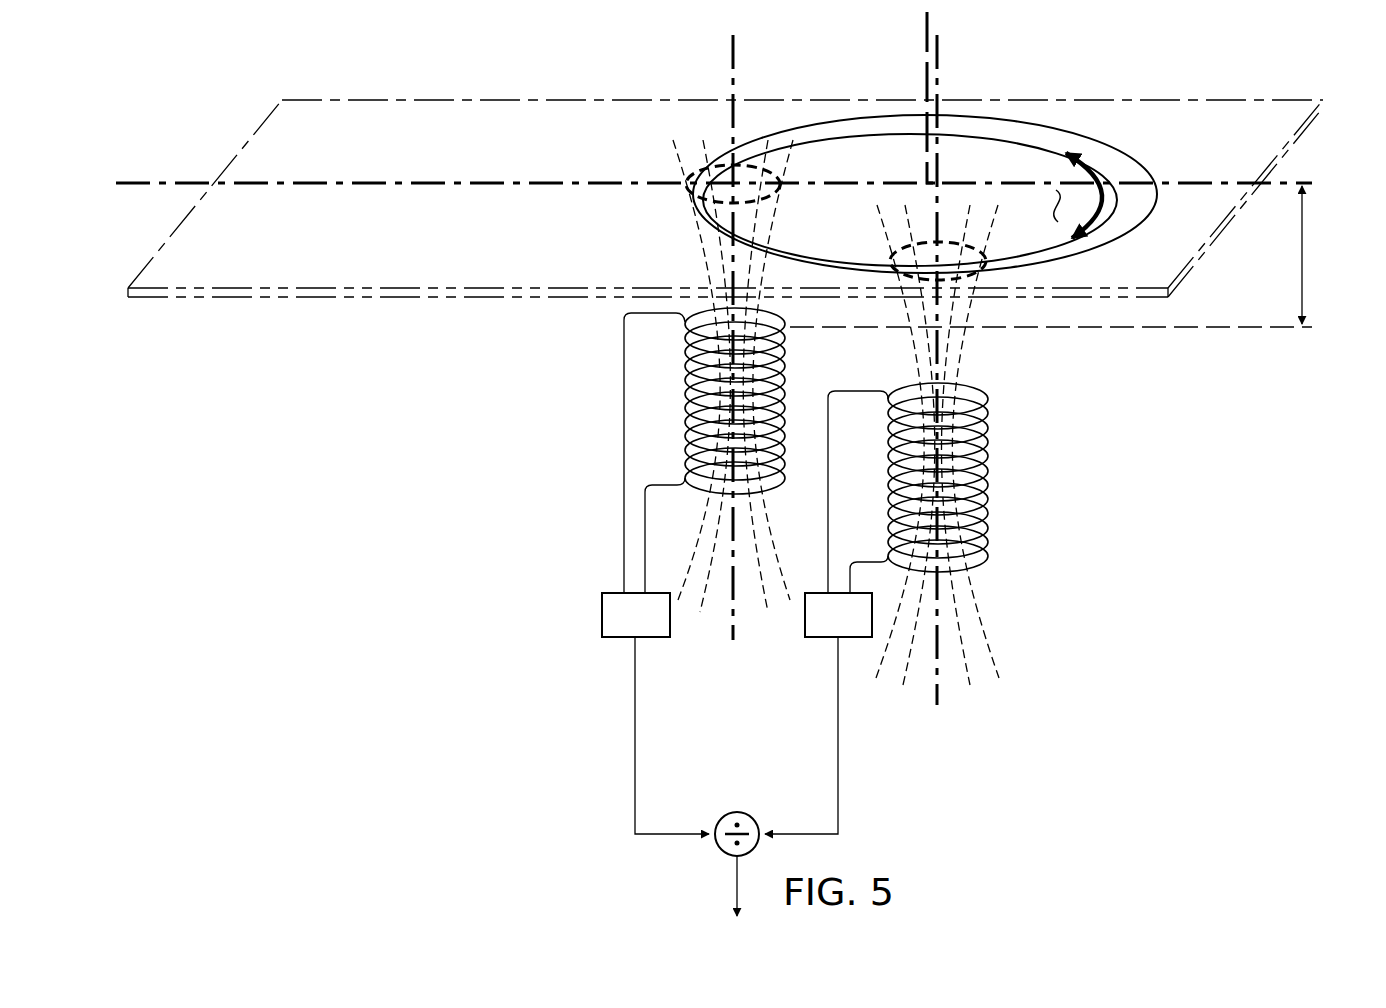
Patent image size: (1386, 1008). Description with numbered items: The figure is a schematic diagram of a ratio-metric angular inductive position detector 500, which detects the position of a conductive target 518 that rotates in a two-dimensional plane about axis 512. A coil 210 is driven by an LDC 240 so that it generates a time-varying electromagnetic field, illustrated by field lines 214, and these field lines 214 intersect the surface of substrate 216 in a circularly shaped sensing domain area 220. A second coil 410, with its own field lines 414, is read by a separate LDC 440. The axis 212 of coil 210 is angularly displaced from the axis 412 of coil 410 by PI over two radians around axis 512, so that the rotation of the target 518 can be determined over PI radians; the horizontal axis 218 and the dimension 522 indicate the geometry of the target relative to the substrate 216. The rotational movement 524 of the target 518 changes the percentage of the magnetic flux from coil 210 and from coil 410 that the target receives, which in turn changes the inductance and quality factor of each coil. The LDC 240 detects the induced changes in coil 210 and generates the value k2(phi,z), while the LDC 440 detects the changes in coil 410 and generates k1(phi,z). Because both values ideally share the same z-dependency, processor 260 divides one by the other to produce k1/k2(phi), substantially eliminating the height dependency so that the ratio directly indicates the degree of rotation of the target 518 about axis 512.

The inductive position detector 500 is at (570, 60).
The substrate 216 is at (410, 100).
The axis 218 is at (127, 183).
The axis of coil 410 412 is at (727, 47).
The axis of coil 210 212 is at (941, 52).
The axis 512 is at (924, 40).
The target 518 is at (1093, 150).
The rotational movement 524 is at (1112, 180).
The distance 522 is at (1305, 258).
The field lines 414 is at (676, 158).
The field lines 214 is at (880, 240).
The sensing domain area 220 is at (975, 280).
The coil 410 is at (790, 372).
The coil 210 is at (980, 568).
The LDC 440 is at (602, 617).
The LDC 240 is at (815, 637).
The processor 260 is at (753, 820).